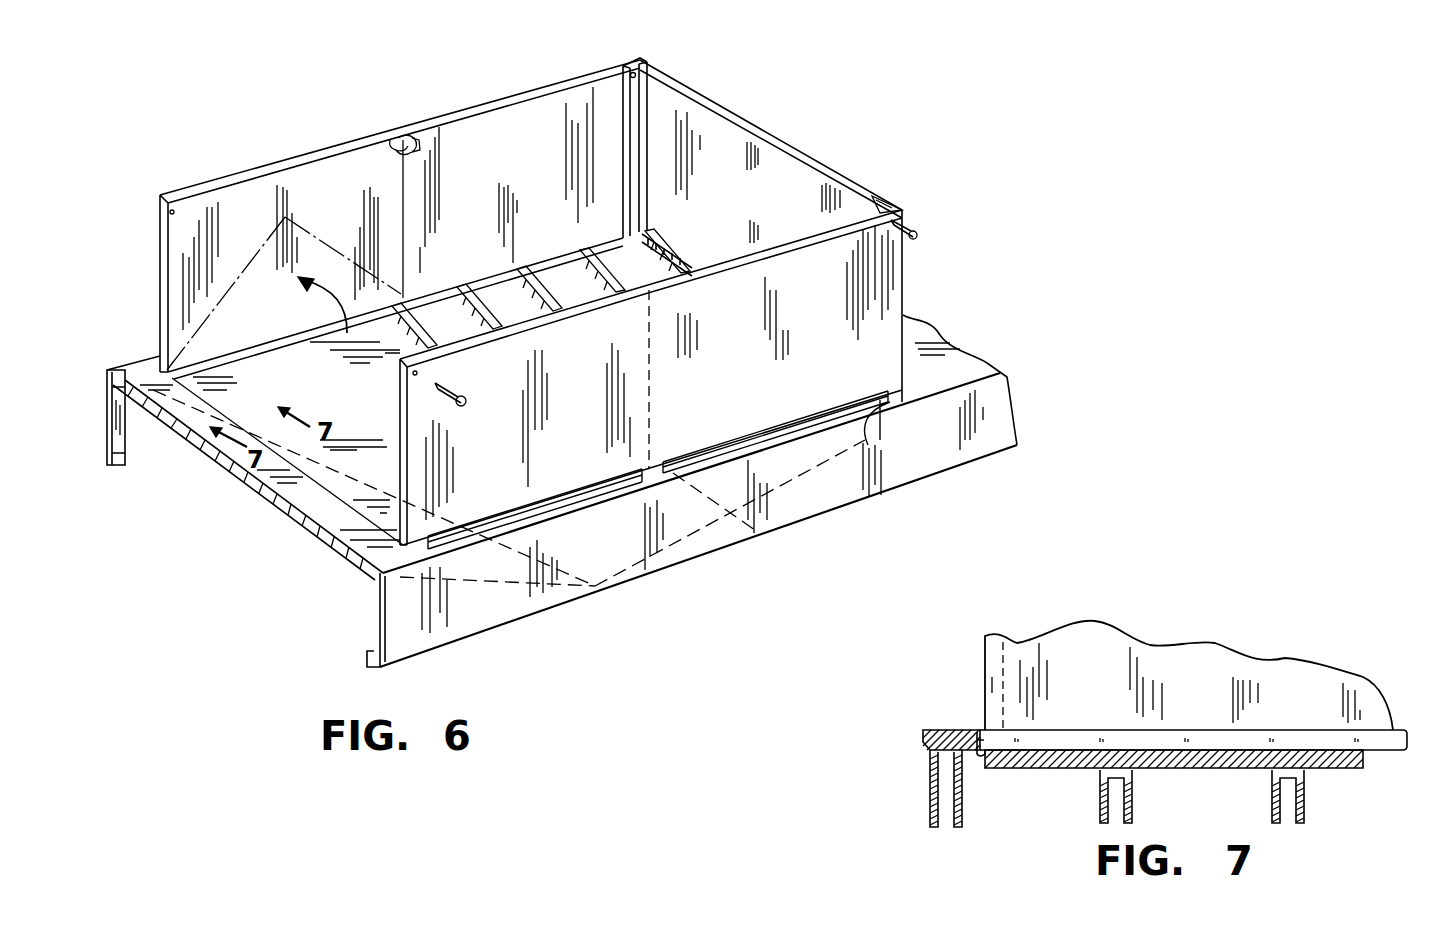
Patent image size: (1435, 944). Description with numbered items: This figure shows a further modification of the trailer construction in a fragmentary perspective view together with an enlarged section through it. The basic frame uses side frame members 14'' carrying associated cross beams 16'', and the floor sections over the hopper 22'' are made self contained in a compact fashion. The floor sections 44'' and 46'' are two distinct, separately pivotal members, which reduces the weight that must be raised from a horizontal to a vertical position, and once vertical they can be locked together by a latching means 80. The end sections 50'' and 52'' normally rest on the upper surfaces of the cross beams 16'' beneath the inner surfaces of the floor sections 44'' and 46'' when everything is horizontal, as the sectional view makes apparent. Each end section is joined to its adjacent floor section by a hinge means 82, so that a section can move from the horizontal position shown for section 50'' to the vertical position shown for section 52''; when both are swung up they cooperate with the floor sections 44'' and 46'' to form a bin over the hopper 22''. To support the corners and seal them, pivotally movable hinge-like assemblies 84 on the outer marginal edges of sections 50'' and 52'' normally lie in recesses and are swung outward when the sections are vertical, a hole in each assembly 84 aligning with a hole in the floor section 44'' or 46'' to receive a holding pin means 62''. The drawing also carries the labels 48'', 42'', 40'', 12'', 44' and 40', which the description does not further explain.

In FIG. 6, the floor section 44'' is at (400, 219).
In FIG. 6, the latching means 80 is at (403, 135).
In FIG. 6, the hinge-like assembly 84 is at (633, 72).
In FIG. 6, the end section 52'' is at (771, 151).
In FIG. 6, the hinge means 82 is at (672, 258).
In FIG. 7, the hinge means 82 is at (985, 735).
In FIG. 6, the cross beam 16'' is at (541, 286).
In FIG. 7, the cross beam 16'' is at (1117, 788).
In FIG. 6, the floor section 46'' is at (651, 377).
In FIG. 6, the holding pin means 62'' is at (708, 305).
In FIG. 6, the bottom rail track 48'' is at (684, 470).
In FIG. 6, the side wall 42'' is at (960, 363).
In FIG. 6, the end section 50'' is at (271, 444).
In FIG. 7, the end section 50'' is at (1190, 784).
In FIG. 6, the base plate 40'' is at (553, 468).
In FIG. 6, the edge channel 12'' is at (124, 391).
In FIG. 6, the side frame member 14'' is at (692, 539).
In FIG. 6, the hopper 22'' is at (509, 500).
In FIG. 7, the wall panel 44' is at (1189, 675).
In FIG. 7, the base plate 40' is at (1152, 722).